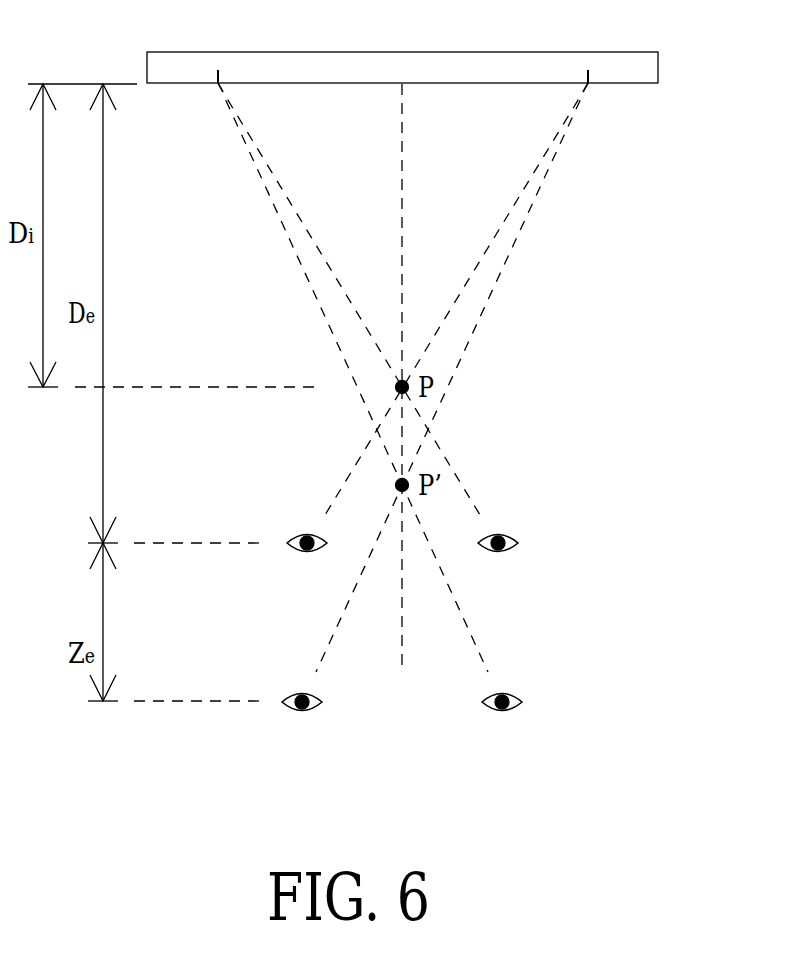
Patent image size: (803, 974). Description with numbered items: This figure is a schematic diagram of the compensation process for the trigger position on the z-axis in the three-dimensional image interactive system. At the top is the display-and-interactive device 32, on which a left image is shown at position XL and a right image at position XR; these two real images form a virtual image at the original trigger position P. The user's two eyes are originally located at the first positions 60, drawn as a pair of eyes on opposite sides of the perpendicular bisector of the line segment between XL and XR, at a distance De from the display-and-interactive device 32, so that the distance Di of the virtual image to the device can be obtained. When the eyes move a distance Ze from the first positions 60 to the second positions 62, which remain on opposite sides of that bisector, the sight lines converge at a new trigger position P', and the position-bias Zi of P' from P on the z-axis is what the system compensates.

The display-and-interactive device 32 is at (644, 69).
The first positions 60 is at (538, 539).
The second positions 62 is at (545, 697).